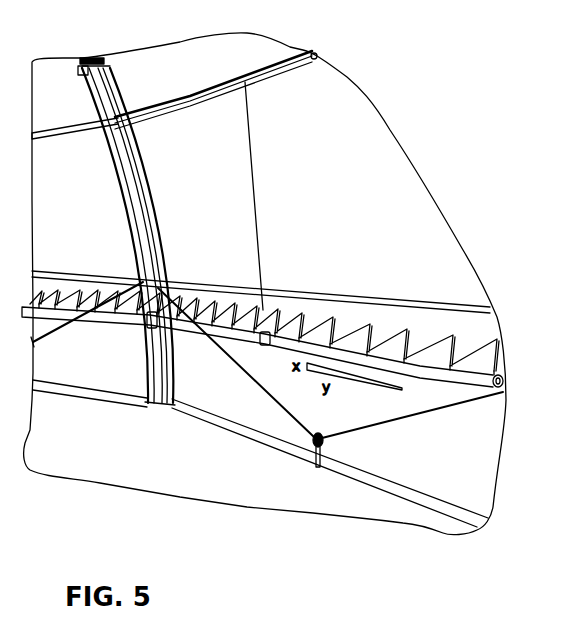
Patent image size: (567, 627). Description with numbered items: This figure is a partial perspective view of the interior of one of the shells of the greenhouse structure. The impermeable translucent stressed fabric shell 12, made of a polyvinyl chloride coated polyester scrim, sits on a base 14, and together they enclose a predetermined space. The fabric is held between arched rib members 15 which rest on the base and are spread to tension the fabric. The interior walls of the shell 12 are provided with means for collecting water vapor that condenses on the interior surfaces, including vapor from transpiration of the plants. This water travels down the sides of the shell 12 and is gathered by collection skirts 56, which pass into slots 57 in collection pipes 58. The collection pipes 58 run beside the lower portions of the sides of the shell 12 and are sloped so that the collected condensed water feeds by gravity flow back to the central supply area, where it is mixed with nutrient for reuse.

The stressed fabric shell 12 is at (385, 157).
The base 14 is at (100, 459).
The arched rib members 15 is at (108, 70).
The collection skirts 56 is at (420, 350).
The slots 57 is at (458, 367).
The collection pipes 58 is at (432, 366).